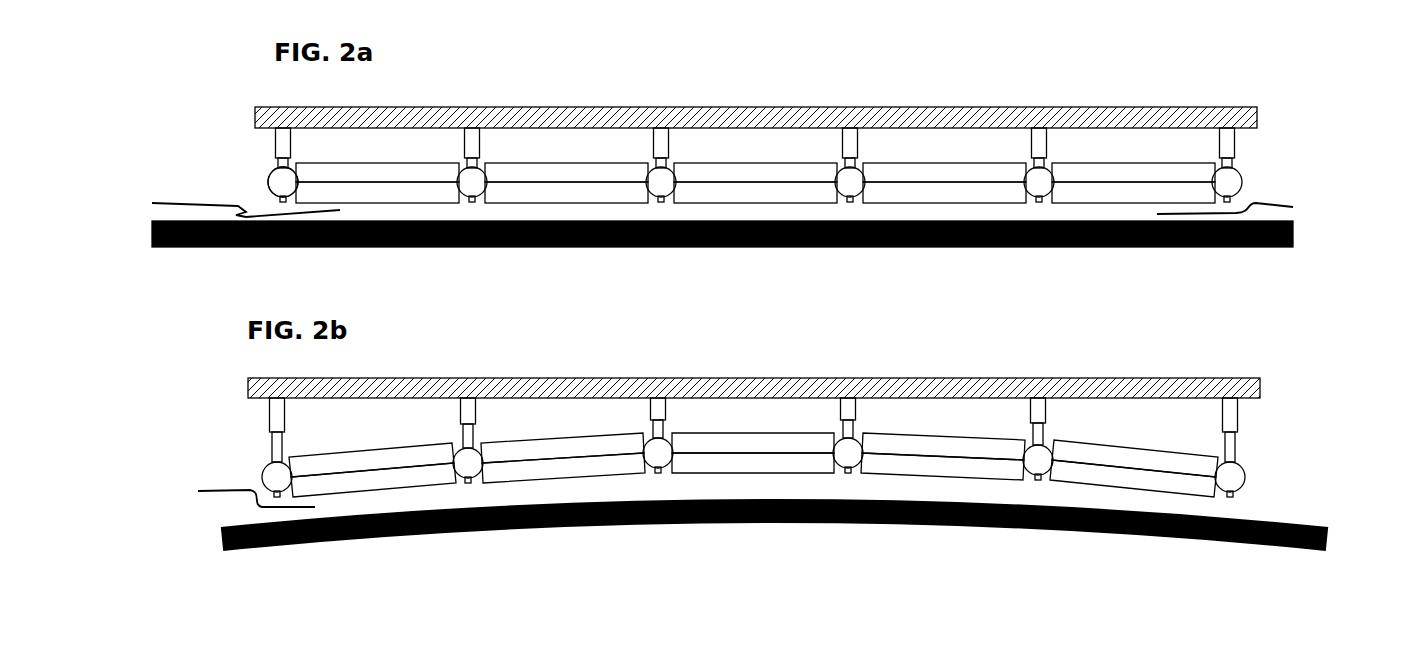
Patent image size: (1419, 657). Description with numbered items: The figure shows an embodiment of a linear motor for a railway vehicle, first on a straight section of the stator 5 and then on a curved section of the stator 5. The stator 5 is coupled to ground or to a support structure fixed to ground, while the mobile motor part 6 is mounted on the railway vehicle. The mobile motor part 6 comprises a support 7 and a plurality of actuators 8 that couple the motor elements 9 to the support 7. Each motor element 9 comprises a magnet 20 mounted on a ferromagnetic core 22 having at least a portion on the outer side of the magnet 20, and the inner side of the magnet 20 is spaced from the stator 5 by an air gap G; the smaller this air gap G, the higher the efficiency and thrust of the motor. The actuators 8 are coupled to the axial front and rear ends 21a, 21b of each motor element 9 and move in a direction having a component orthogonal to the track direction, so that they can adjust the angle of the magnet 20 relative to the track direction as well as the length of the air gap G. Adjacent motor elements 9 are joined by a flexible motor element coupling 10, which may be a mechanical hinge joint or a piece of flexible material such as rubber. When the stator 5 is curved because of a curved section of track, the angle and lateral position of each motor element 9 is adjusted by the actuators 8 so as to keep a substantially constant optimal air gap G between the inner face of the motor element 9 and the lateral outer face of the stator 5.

In FIG. 2a, the stator 5 is at (1269, 264).
In FIG. 2b, the stator 5 is at (1284, 559).
In FIG. 2a, the mobile motor part 6 is at (764, 109).
In FIG. 2b, the mobile motor part 6 is at (771, 398).
In FIG. 2a, the support 7 is at (838, 118).
In FIG. 2b, the support 7 is at (840, 387).
In FIG. 2a, the actuators 8 is at (764, 133).
In FIG. 2b, the actuators 8 is at (771, 433).
In FIG. 2a, the motor elements 9 is at (755, 120).
In FIG. 2b, the motor elements 9 is at (753, 398).
In FIG. 2a, the flexible motor element coupling 10 is at (1232, 183).
In FIG. 2b, the flexible motor element coupling 10 is at (1232, 480).
In FIG. 2a, the magnet 20 is at (1078, 190).
In FIG. 2b, the magnet 20 is at (1082, 473).
In FIG. 2a, the axial front end 21a is at (282, 200).
In FIG. 2a, the axial rear end 21b is at (458, 200).
In FIG. 2a, the ferromagnetic core 22 is at (1142, 172).
In FIG. 2b, the ferromagnetic core 22 is at (1177, 462).
In FIG. 2a, the air gap G is at (723, 205).
In FIG. 2b, the air gap G is at (236, 495).